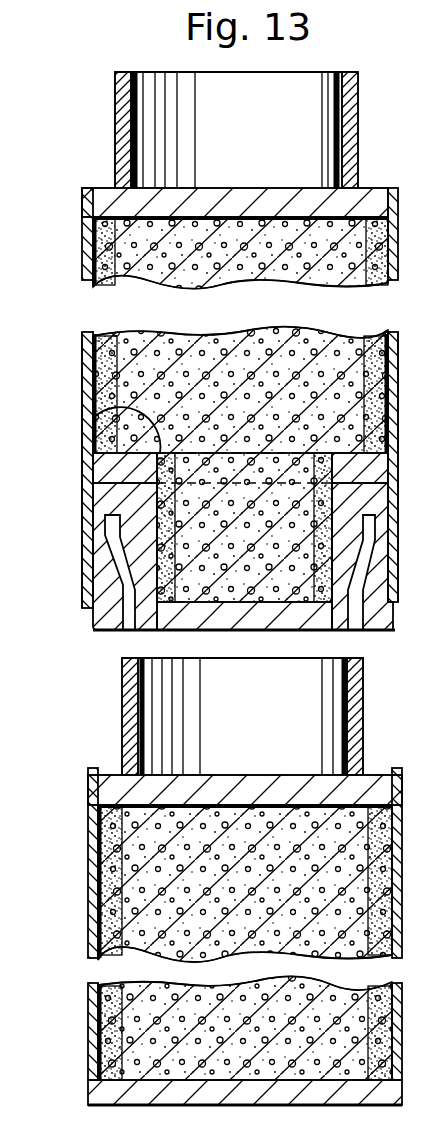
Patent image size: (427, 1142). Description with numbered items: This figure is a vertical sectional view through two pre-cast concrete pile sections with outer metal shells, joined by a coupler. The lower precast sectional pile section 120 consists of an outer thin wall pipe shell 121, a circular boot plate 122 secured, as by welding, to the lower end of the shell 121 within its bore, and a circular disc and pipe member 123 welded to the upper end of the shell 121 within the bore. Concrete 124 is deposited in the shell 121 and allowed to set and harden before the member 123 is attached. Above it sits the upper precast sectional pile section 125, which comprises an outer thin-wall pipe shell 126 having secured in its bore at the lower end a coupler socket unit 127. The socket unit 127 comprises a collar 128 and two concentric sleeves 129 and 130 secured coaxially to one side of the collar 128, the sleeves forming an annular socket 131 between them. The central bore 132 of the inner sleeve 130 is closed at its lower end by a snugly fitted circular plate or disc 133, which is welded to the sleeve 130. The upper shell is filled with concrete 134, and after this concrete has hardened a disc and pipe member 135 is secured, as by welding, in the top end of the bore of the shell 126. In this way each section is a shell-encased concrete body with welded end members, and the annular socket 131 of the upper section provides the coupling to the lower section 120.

The lower precast sectional pile section 120 is at (88, 905).
The outer thin wall pipe shell 121 is at (95, 1000).
The circular boot plate 122 is at (208, 1095).
The circular disc and pipe member 123 is at (110, 775).
The concrete 124 is at (120, 872).
The upper precast sectional pile section 125 is at (82, 369).
The outer thin-wall pipe shell 126 is at (83, 350).
The coupler socket unit 127 is at (92, 628).
The collar 128 is at (105, 469).
The outer sleeve 129 is at (107, 502).
The inner sleeve 130 is at (117, 550).
The annular socket 131 is at (118, 567).
The central bore 132 is at (93, 412).
The circular plate or disc 133 is at (213, 627).
The concrete 134 is at (95, 247).
The disc and pipe member 135 is at (107, 188).